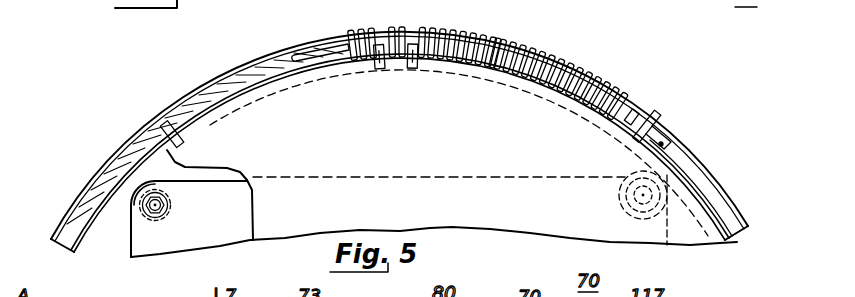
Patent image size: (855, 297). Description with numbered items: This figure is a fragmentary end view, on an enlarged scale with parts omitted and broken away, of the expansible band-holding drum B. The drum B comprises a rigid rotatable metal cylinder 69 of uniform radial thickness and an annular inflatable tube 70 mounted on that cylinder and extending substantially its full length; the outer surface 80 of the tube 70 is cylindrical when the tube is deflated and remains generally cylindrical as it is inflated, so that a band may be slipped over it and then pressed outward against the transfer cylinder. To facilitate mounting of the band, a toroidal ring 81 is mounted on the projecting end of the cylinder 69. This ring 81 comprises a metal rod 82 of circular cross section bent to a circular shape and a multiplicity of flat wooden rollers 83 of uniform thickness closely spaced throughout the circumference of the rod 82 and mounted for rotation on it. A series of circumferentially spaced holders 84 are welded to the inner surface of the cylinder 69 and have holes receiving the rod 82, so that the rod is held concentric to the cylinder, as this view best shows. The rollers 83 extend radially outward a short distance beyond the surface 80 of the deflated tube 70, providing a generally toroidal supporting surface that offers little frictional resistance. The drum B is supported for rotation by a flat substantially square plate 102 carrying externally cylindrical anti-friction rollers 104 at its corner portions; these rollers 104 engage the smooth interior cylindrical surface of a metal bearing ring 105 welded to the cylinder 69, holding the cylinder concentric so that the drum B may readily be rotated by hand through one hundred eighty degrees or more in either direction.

The rigid rotatable metal cylinder 69 is at (136, 157).
The annular inflatable tube 70 is at (720, 188).
The outer surface 80 is at (240, 66).
The toroidal ring 81 is at (500, 44).
The metal rod 82 is at (306, 57).
The flat wooden rollers 83 is at (560, 61).
The holders 84 is at (411, 69).
The flat substantially square plate 102 is at (405, 177).
The anti-friction rollers 104 is at (127, 214).
The metal bearing ring 105 is at (270, 98).
The expansible band-holding drum B is at (167, 99).